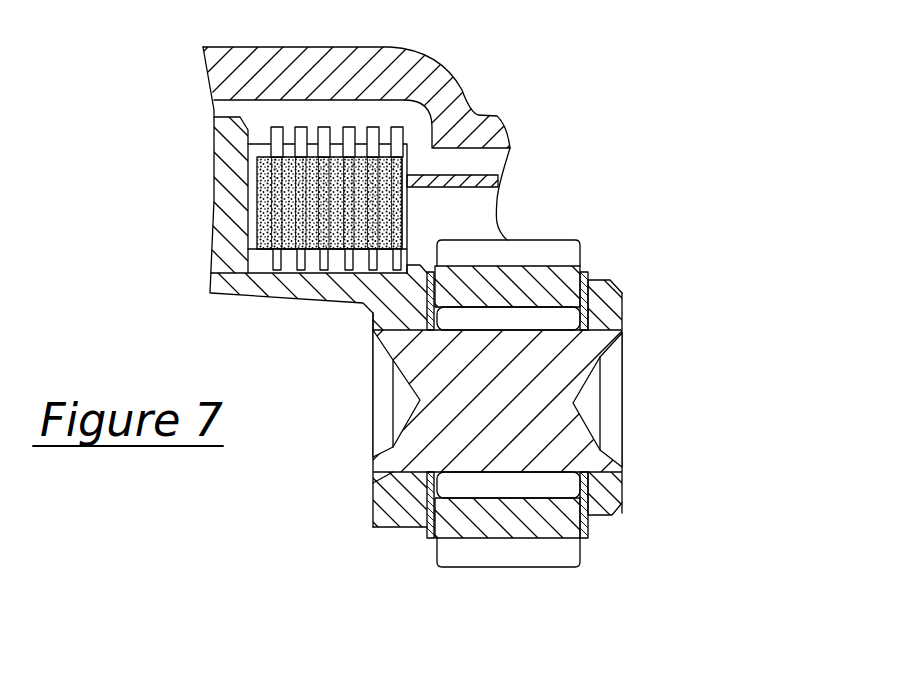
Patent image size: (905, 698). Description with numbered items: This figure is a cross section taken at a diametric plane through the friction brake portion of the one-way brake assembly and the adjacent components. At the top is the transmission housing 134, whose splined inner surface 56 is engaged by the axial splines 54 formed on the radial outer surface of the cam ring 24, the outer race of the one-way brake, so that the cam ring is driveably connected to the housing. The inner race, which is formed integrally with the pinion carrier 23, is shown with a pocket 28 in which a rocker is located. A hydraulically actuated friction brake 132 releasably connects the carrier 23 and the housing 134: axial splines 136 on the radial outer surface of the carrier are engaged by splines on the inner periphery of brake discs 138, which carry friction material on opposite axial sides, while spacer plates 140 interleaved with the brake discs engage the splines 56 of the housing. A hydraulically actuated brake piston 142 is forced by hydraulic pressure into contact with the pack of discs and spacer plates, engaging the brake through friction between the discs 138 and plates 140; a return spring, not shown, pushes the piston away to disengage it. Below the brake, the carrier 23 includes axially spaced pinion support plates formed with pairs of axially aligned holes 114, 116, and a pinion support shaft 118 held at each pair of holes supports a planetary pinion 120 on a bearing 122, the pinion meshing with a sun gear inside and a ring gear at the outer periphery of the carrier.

The pinion carrier 23 is at (492, 387).
The cam ring 24 is at (223, 193).
The pocket 28 is at (216, 282).
The axial splines 54 is at (226, 125).
The splined inner surface 56 is at (260, 133).
The hole 114 is at (387, 501).
The hole 116 is at (607, 300).
The pinion support shaft 118 is at (518, 416).
The planetary pinion 120 is at (552, 264).
The bearing 122 is at (612, 512).
The friction brake 132 is at (413, 130).
The transmission housing 134 is at (283, 57).
The axial splines 136 is at (411, 262).
The brake discs 138 is at (262, 248).
The spacer plates 140 is at (397, 127).
The brake piston 142 is at (466, 178).